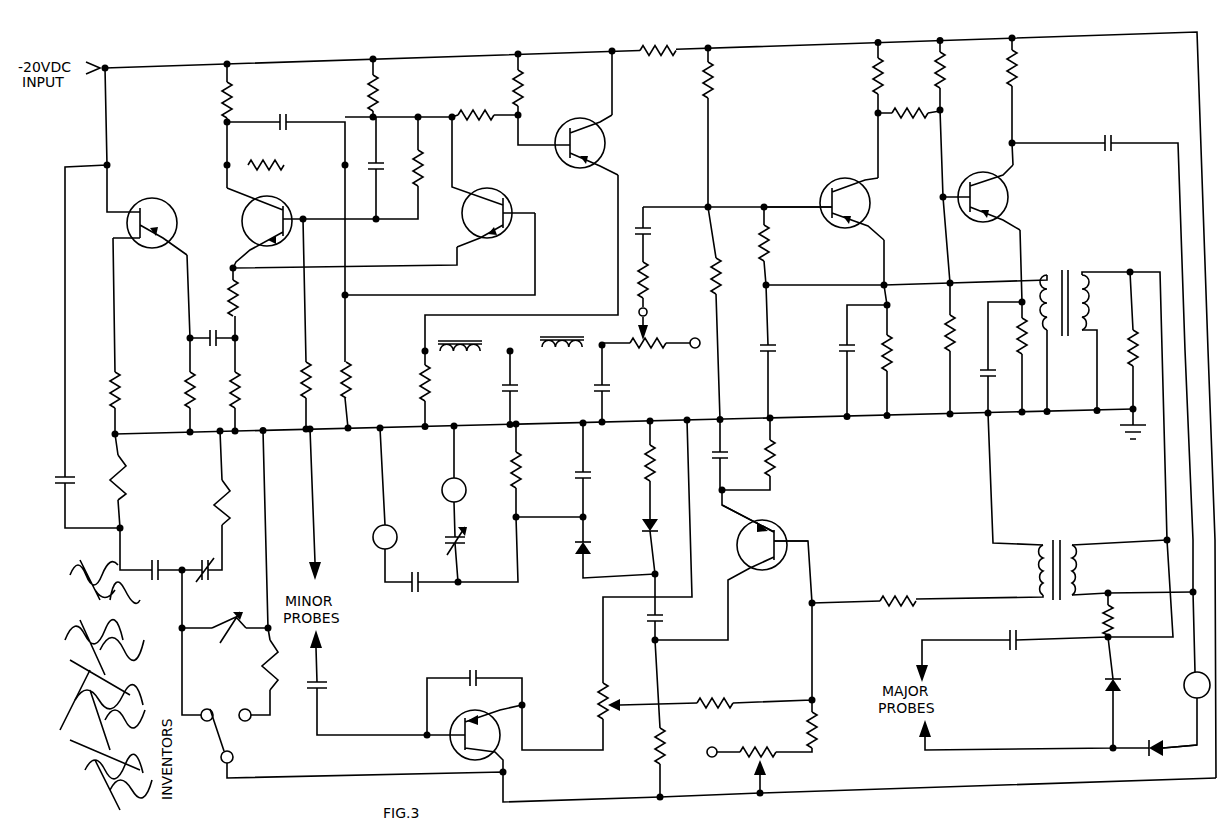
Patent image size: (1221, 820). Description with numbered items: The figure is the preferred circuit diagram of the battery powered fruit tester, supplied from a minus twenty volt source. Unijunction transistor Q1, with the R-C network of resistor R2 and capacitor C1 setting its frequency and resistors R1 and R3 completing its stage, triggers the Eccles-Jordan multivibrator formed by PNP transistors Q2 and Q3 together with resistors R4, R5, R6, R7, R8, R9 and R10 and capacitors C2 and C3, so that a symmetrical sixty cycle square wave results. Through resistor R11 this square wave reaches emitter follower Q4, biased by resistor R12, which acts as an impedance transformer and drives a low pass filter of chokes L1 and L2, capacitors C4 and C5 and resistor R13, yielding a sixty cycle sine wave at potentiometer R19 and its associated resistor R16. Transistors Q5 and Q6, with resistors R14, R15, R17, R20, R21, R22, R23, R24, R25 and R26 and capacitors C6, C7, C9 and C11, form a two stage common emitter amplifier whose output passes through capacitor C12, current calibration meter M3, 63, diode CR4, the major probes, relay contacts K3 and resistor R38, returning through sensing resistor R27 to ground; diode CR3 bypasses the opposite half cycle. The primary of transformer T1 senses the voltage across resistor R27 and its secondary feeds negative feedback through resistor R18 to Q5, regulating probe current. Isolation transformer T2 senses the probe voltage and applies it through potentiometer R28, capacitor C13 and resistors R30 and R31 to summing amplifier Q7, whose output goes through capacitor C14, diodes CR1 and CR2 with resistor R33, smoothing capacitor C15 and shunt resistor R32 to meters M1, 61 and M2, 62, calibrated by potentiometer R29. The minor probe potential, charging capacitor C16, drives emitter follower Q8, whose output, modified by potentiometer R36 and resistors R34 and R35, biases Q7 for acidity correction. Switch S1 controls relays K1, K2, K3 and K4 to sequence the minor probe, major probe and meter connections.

The resistor R1 is at (103, 390).
The resistor R2 is at (176, 390).
The resistor R3 is at (223, 390).
The resistor R4 is at (294, 380).
The resistor R5 is at (360, 380).
The resistor R6 is at (248, 298).
The resistor R7 is at (266, 157).
The resistor R8 is at (428, 168).
The resistor R9 is at (385, 93).
The resistor R10 is at (205, 100).
The resistor R11 is at (477, 126).
The resistor R12 is at (501, 88).
The resistor R13 is at (442, 383).
The resistor R14 is at (658, 42).
The resistor R15 is at (725, 80).
The resistor R16 is at (661, 301).
The resistor R17 is at (732, 276).
The resistor R18 is at (781, 243).
The potentiometer R19 is at (665, 353).
The resistor R20 is at (901, 352).
The resistor R21 is at (861, 76).
The resistor R22 is at (957, 70).
The resistor R23 is at (910, 104).
The resistor R24 is at (1029, 68).
The resistor R25 is at (935, 330).
The resistor R26 is at (1008, 331).
The sensing resistor R27 is at (1117, 342).
The potentiometer R28 is at (898, 591).
The potentiometer R29 is at (741, 751).
The resistor R30 is at (829, 730).
The resistor R31 is at (788, 458).
The shunt resistor R32 is at (531, 470).
The resistor R33 is at (665, 463).
The resistor R34 is at (676, 746).
The resistor R35 is at (715, 693).
The potentiometer R36 is at (619, 697).
The resistor R38 is at (1124, 620).
The capacitor C1 is at (207, 329).
The capacitor C2 is at (277, 113).
The capacitor C3 is at (386, 165).
The capacitor C4 is at (522, 385).
The capacitor C5 is at (588, 385).
The capacitor C6 is at (656, 234).
The capacitor C7 is at (754, 347).
The capacitor C9 is at (830, 347).
The capacitor C11 is at (974, 372).
The capacitor C12 is at (1108, 133).
The capacitor C13 is at (736, 460).
The capacitor C14 is at (672, 618).
The smoothing capacitor C15 is at (598, 474).
The capacitor C16 is at (469, 670).
The unijunction transistor Q1 is at (150, 217).
The transistor Q2 is at (268, 222).
The transistor Q3 is at (496, 208).
The transistor Q4 is at (586, 135).
The transistor Q5 is at (824, 196).
The transistor Q6 is at (981, 192).
The summing amplifier transistor Q7 is at (765, 537).
The transistor Q8 is at (474, 736).
The choke L1 is at (460, 336).
The choke L2 is at (562, 332).
The transformer T1 is at (1064, 294).
The isolation transformer T2 is at (1058, 561).
The relay K1 is at (221, 617).
The relay K2 is at (281, 587).
The relay K3 is at (565, 552).
The relay K4 is at (249, 581).
The switch S1 is at (230, 726).
The diode CR1 is at (564, 548).
The diode CR2 is at (631, 524).
The diode CR3 is at (1094, 686).
The diode CR4 is at (1151, 742).
The meter M1 is at (466, 494).
The meter 61 is at (466, 494).
The meter M2 is at (369, 539).
The meter 62 is at (369, 539).
The current calibration meter M3 is at (1180, 685).
The current calibration meter 63 is at (1180, 685).